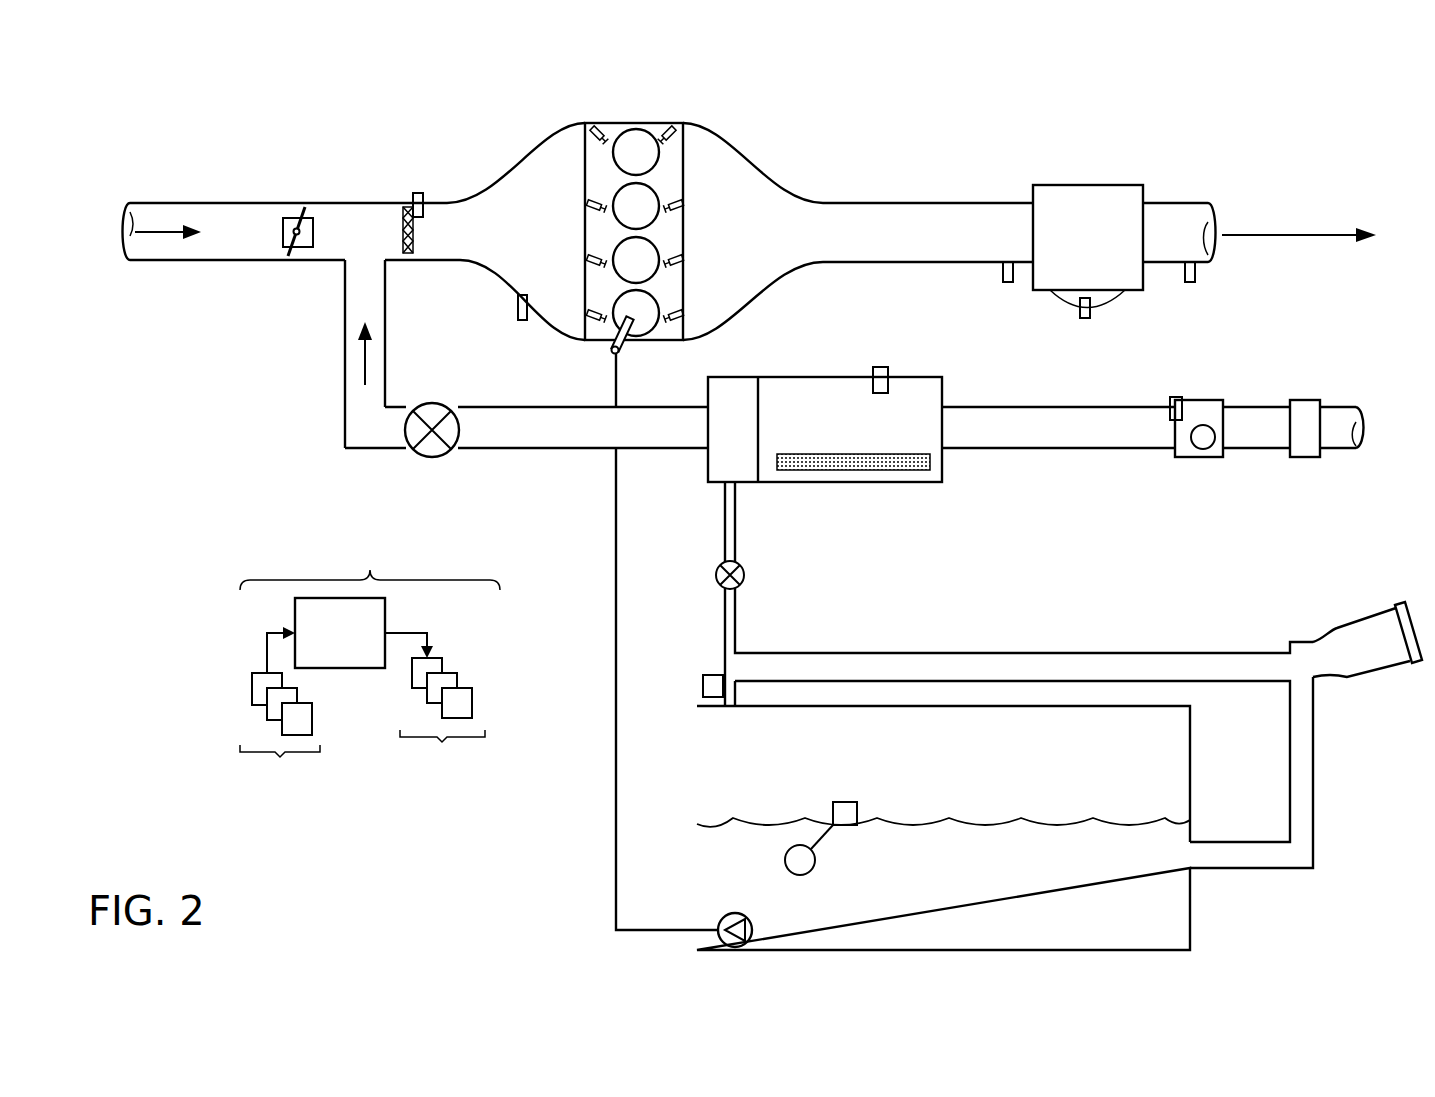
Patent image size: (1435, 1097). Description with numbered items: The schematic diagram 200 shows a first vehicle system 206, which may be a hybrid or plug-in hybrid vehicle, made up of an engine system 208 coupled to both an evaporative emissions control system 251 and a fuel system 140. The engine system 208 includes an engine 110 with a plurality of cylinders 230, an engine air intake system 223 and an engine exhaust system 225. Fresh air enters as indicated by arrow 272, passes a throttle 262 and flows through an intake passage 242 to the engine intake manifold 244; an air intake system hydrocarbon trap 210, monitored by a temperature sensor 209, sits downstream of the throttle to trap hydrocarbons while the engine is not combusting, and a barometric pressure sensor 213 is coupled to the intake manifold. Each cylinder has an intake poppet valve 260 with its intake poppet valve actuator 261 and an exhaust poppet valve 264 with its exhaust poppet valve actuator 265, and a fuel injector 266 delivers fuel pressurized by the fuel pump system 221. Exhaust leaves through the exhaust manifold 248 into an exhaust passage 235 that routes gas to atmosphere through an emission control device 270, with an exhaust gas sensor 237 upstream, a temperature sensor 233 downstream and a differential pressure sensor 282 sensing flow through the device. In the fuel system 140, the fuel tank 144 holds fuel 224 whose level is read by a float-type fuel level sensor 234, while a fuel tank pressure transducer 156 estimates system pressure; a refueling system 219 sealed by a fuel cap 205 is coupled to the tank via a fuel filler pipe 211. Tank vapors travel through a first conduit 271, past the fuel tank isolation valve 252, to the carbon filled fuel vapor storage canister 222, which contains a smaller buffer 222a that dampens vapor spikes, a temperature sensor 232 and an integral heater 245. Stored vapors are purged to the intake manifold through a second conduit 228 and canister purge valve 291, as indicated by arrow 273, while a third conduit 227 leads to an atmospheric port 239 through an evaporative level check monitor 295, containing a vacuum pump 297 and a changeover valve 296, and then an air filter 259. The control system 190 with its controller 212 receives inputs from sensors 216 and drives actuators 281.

The schematic diagram 200 is at (1358, 100).
The vehicle system 206 is at (124, 131).
The engine system 208 is at (992, 130).
The engine 110 is at (686, 212).
The cylinders 230 is at (656, 140).
The engine intake manifold 244 is at (545, 244).
The exhaust manifold 248 is at (777, 244).
The engine air intake system 223 is at (508, 148).
The engine exhaust system 225 is at (778, 150).
The arrow 272 is at (176, 232).
The throttle 262 is at (313, 240).
The intake passage 242 is at (332, 262).
The arrow 273 is at (365, 362).
The air intake system hydrocarbon trap 210 is at (405, 207).
The temperature sensor 209 is at (418, 193).
The barometric pressure sensor 213 is at (518, 305).
The intake poppet valve 260 is at (590, 149).
The intake poppet valve actuator 261 is at (595, 123).
The exhaust poppet valve 264 is at (664, 137).
The exhaust poppet valve actuator 265 is at (674, 123).
The fuel injector 266 is at (626, 349).
The emission control device 270 is at (1073, 185).
The exhaust passage 235 is at (1158, 203).
The exhaust gas sensor 237 is at (1002, 272).
The temperature sensor 233 is at (1185, 274).
The differential pressure sensor 282 is at (1080, 307).
The canister purge valve 291 is at (432, 404).
The second conduit 228 is at (556, 441).
The third conduit 227 is at (990, 441).
The carbon filled fuel vapor storage canister 222 is at (943, 462).
The buffer 222a is at (749, 377).
The temperature sensor 232 is at (880, 367).
The integral heater 245 is at (846, 465).
The evaporative emissions control system 251 is at (1298, 344).
The evaporative level check monitor 295 is at (1202, 400).
The changeover valve 296 is at (1173, 397).
The vacuum pump 297 is at (1205, 440).
The air filter 259 is at (1310, 400).
The atmospheric port 239 is at (1352, 445).
The fuel tank isolation valve 252 is at (738, 588).
The first conduit 271 is at (737, 628).
The fuel tank pressure transducer 156 is at (700, 687).
The fuel 224 is at (1020, 904).
The fuel level sensor 234 is at (845, 802).
The fuel tank 144 is at (1191, 810).
The fuel pump system 221 is at (733, 913).
The fuel system 140 is at (1236, 897).
The fuel filler pipe 211 is at (1315, 795).
The fuel cap 205 is at (1400, 603).
The refueling system 219 is at (1364, 594).
The control system 190 is at (370, 557).
The controller 212 is at (324, 646).
The sensors 216 is at (280, 713).
The actuators 281 is at (435, 707).